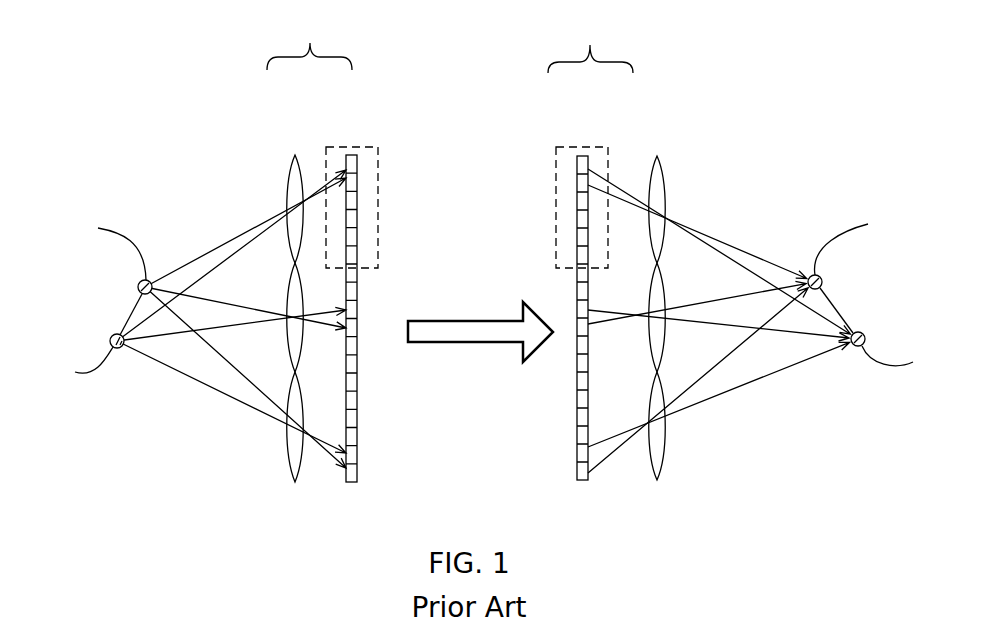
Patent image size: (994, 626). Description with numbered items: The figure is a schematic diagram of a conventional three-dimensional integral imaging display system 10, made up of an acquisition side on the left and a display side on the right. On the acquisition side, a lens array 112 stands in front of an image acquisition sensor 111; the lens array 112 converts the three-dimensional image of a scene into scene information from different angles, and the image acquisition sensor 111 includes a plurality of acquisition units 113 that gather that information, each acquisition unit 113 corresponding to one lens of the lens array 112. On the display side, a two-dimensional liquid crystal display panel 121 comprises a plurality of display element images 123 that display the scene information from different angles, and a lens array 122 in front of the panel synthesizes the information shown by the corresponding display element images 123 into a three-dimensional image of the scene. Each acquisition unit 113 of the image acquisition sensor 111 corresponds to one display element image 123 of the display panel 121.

The three-dimensional integral imaging display system 10 is at (104, 74).
The image acquisition sensor 111 is at (352, 155).
The lens array 112 is at (297, 155).
The acquisition unit 113 is at (378, 172).
The two-dimensional liquid crystal display panel 121 is at (587, 156).
The lens array 122 is at (663, 172).
The display element image 123 is at (608, 170).